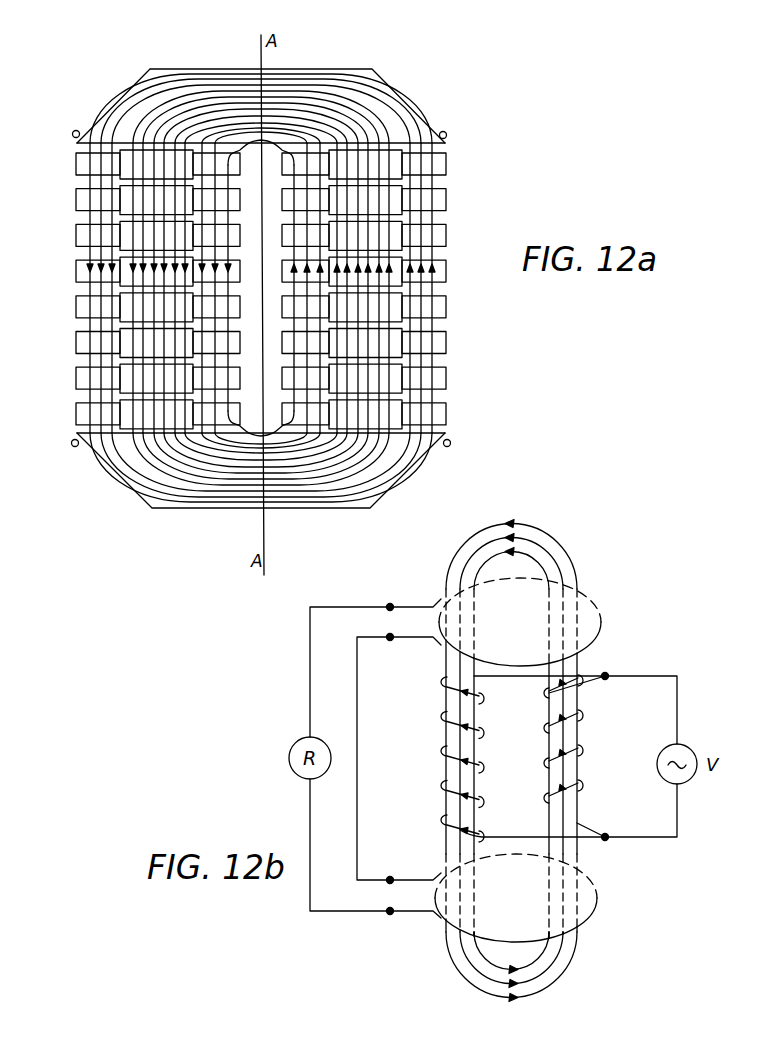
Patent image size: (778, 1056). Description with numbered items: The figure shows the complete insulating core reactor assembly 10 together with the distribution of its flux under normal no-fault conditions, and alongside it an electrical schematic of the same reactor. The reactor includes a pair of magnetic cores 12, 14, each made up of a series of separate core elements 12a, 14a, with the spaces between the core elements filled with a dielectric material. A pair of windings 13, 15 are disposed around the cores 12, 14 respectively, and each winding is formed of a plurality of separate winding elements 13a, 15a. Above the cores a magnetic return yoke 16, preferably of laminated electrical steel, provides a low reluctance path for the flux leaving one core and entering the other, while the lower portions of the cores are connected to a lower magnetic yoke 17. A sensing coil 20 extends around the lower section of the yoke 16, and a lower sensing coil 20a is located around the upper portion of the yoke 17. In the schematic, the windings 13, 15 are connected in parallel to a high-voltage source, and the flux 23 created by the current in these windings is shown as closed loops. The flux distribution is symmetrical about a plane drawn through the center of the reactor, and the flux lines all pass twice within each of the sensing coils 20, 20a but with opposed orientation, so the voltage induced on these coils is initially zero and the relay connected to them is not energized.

In FIG. 12a, the transformer assembly 10 is at (202, 62).
In FIG. 12a, the core 12 is at (112, 255).
In FIG. 12a, the core element 12a is at (120, 286).
In FIG. 12a, the winding 13 is at (70, 195).
In FIG. 12b, the winding 13 is at (441, 714).
In FIG. 12a, the winding element 13a is at (76, 231).
In FIG. 12a, the core 14 is at (410, 255).
In FIG. 12a, the core element 14a is at (403, 291).
In FIG. 12a, the winding 15 is at (458, 338).
In FIG. 12b, the winding 15 is at (548, 729).
In FIG. 12a, the winding element 15a is at (447, 378).
In FIG. 12a, the magnetic return yoke 16 is at (351, 74).
In FIG. 12a, the lower magnetic yoke 17 is at (338, 507).
In FIG. 12a, the sensing coil 20 is at (76, 130).
In FIG. 12b, the sensing coil 20 is at (598, 630).
In FIG. 12a, the lower sensing coil 20a is at (74, 447).
In FIG. 12b, the lower sensing coil 20a is at (588, 920).
In FIG. 12a, the flux 23 is at (262, 475).
In FIG. 12b, the flux 23 is at (569, 557).